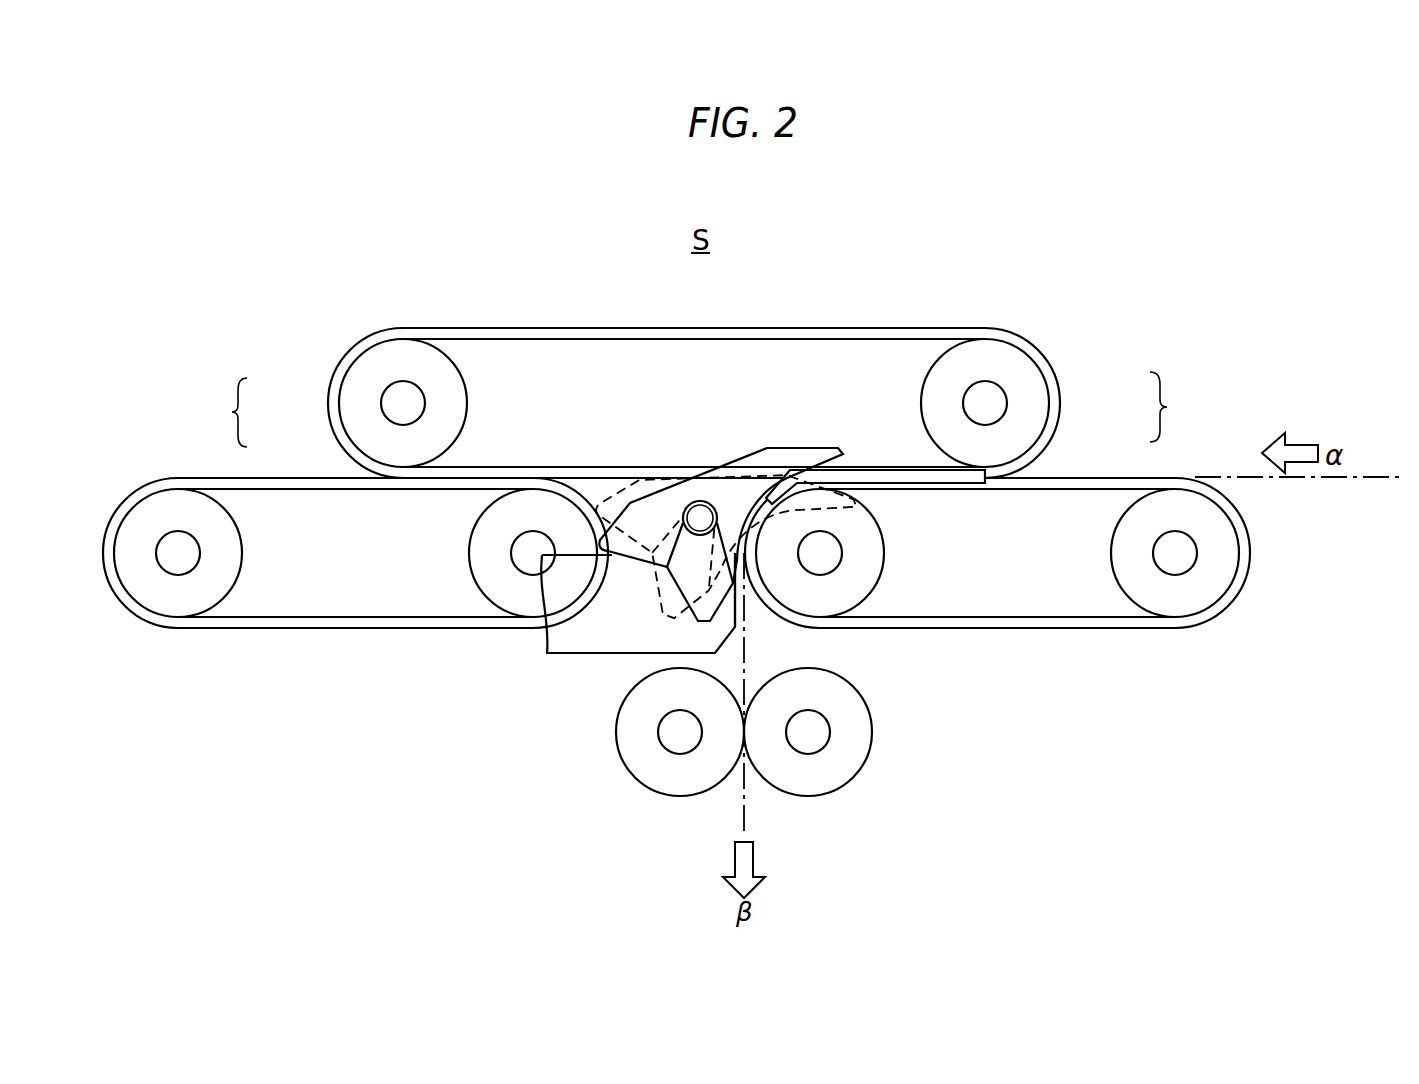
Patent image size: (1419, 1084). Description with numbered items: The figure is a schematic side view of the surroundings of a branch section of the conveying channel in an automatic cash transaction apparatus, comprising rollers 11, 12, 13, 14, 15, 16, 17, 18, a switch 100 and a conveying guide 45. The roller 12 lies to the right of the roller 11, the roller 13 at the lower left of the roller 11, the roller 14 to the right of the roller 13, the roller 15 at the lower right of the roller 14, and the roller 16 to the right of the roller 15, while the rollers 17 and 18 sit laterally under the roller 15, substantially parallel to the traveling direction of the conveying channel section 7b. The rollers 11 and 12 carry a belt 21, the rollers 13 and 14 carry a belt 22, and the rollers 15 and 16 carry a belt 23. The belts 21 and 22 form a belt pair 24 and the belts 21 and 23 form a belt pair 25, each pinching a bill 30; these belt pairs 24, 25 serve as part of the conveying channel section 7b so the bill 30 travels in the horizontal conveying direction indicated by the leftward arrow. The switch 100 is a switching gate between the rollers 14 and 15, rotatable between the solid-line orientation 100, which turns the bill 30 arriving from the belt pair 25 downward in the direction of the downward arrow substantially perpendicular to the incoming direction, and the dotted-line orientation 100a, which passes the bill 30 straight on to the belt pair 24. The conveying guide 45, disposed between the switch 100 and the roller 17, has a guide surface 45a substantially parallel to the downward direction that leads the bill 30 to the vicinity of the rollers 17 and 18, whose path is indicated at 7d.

The roller 11 is at (405, 352).
The roller 12 is at (983, 350).
The roller 13 is at (188, 610).
The roller 14 is at (490, 592).
The roller 15 is at (865, 592).
The roller 16 is at (1183, 605).
The roller 17 is at (628, 762).
The roller 18 is at (868, 742).
The belt 21 is at (330, 400).
The belt 22 is at (298, 476).
The belt 23 is at (1090, 475).
The belt pair 24 is at (221, 412).
The belt pair 25 is at (1176, 407).
The bill 30 is at (884, 470).
The conveying guide 45 is at (586, 655).
The guide surface 45a is at (737, 613).
The switch 100 is at (755, 447).
The rotational position of the switch 100a is at (645, 585).
The conveying channel section 7b is at (1335, 479).
The downward conveyance path 7d is at (745, 817).